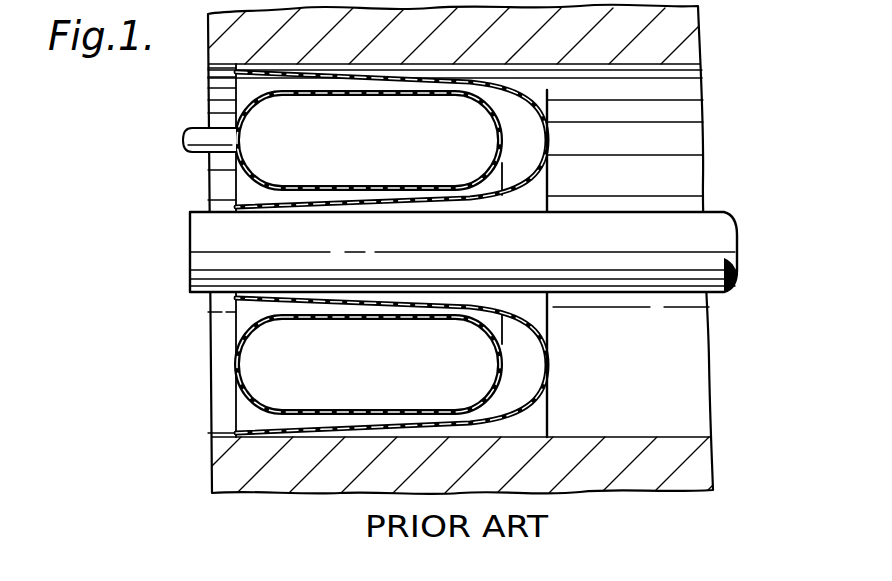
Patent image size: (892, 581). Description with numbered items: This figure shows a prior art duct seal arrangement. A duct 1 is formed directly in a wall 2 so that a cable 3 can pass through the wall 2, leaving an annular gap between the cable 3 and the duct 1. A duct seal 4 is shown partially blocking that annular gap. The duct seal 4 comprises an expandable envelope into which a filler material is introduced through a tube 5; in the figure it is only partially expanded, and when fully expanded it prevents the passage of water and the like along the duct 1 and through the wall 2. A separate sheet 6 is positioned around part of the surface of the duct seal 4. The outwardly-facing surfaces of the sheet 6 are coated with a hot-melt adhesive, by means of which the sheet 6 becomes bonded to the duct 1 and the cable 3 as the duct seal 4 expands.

The duct 1 is at (692, 370).
The wall 2 is at (238, 40).
The cable 3 is at (203, 238).
The duct seal 4 is at (378, 153).
The tube 5 is at (196, 135).
The separate sheet 6 is at (552, 392).